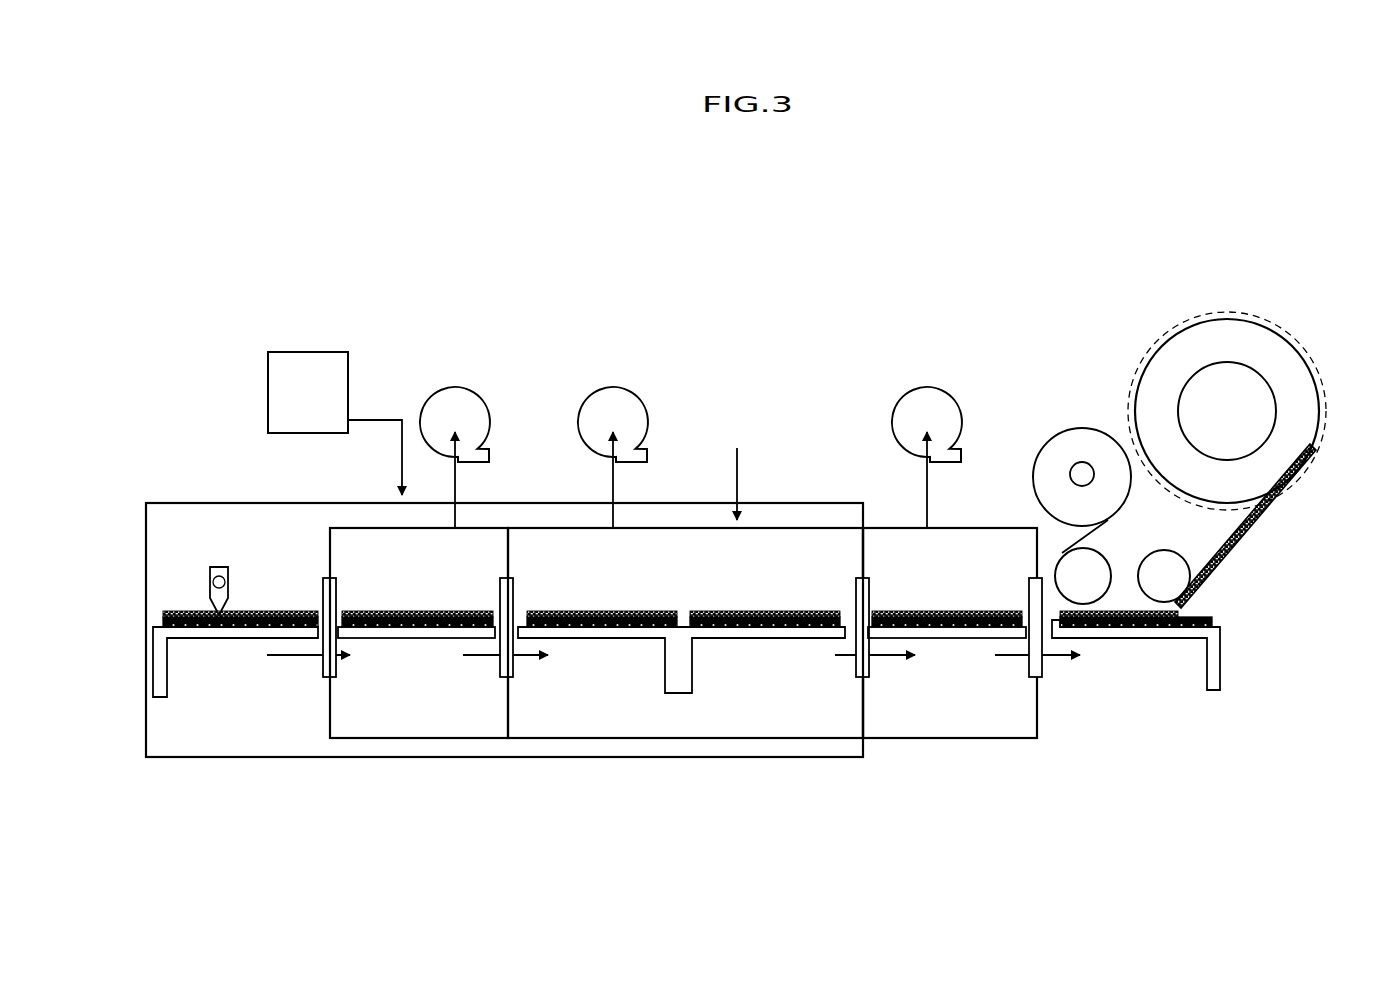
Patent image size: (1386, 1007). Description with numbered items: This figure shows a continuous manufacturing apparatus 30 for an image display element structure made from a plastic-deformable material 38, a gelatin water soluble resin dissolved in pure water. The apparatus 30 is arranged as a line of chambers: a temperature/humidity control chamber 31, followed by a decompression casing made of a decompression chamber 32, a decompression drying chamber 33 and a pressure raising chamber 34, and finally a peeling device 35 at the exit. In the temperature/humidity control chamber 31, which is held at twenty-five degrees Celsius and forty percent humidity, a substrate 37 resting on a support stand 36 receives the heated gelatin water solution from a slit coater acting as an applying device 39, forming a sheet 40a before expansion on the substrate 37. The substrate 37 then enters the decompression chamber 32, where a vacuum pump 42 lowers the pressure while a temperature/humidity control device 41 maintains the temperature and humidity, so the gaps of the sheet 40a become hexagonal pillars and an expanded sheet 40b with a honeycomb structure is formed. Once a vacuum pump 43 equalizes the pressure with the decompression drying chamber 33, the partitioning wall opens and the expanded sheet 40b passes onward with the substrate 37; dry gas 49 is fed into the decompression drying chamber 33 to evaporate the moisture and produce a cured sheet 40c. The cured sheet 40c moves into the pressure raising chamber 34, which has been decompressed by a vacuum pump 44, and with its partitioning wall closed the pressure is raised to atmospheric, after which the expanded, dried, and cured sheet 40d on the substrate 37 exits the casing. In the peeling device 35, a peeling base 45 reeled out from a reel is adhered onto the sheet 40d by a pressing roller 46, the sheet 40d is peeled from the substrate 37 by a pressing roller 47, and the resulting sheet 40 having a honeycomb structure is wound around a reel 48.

The continuous manufacturing apparatus 30 is at (876, 272).
The temperature/humidity control chamber 31 is at (256, 759).
The decompression chamber 32 is at (425, 740).
The decompression drying chamber 33 is at (699, 740).
The pressure raising chamber 34 is at (955, 740).
The peeling device 35 is at (1294, 270).
The support stand 36 is at (158, 665).
The substrate 37 is at (167, 620).
The plastic-deformable material 38 is at (175, 612).
The applying device 39 is at (222, 567).
The sheet having a honeycomb structure 40 is at (1240, 543).
The sheet before expansion 40a is at (418, 612).
The expanded sheet 40b is at (628, 612).
The cured sheet 40c is at (778, 612).
The expanded, dried, and cured sheet 40d is at (986, 612).
The temperature/humidity control device 41 is at (302, 352).
The vacuum pump 42 is at (462, 392).
The vacuum pump 43 is at (622, 392).
The vacuum pump 44 is at (945, 392).
The peeling base 45 is at (1062, 443).
The pressing roller 46 is at (1105, 553).
The pressing roller 47 is at (1180, 553).
The reel 48 is at (1248, 397).
The dry gas 49 is at (737, 471).